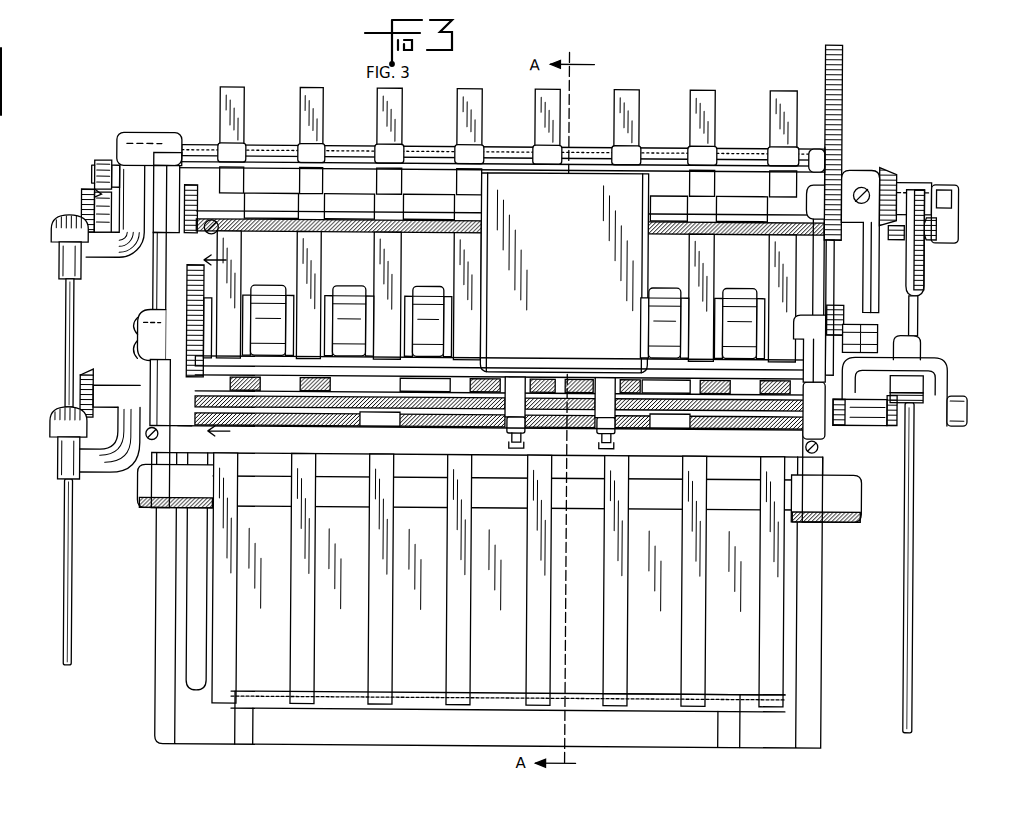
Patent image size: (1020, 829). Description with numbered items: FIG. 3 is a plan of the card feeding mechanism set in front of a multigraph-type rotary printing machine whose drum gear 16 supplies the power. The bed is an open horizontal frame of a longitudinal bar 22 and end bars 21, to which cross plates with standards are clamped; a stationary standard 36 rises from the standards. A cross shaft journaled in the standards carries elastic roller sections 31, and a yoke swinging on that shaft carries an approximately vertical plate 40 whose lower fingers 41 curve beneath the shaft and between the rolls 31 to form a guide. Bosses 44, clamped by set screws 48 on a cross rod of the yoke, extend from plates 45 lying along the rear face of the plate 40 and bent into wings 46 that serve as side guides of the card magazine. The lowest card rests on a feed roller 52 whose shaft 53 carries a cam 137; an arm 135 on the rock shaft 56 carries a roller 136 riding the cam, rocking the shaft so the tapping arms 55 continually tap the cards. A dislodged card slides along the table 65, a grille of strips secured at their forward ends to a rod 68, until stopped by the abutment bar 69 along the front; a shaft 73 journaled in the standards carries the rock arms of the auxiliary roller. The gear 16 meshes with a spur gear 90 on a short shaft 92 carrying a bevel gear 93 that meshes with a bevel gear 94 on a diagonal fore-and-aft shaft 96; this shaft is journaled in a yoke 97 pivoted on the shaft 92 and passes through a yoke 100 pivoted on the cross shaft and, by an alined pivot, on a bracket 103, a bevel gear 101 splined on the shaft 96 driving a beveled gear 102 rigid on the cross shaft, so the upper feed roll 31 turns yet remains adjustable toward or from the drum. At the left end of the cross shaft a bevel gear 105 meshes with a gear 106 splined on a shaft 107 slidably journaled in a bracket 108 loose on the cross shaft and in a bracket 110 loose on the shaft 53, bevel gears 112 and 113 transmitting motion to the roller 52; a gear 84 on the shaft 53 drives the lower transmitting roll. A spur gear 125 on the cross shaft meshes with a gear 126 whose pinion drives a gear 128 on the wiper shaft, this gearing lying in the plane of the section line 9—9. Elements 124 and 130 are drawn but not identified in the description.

The section line 9 is at (214, 346).
The gear 16 is at (840, 102).
The end bars 21 is at (489, 601).
The longitudinal bar 22 is at (508, 719).
The rubber or elastic sections 31 is at (509, 386).
The stationary standard 36 is at (488, 399).
The vertical plate 40 is at (406, 364).
The fingers 41 is at (383, 428).
The bosses 44 is at (510, 428).
The plates 45 is at (510, 377).
The wings 46 is at (486, 290).
The set screws 48 is at (561, 445).
The roller 52 is at (505, 207).
The shaft 53 is at (226, 206).
The tapping arms 55 is at (530, 182).
The rock shaft 56 is at (520, 152).
The table 65 is at (490, 560).
The rod 68 is at (648, 700).
The abutment bar 69 is at (483, 340).
The shaft 73 is at (486, 493).
The gear 84 is at (190, 187).
The spur gear 90 is at (836, 160).
The short shaft 92 is at (960, 192).
The bevel gear 93 is at (895, 172).
The bevel gear 94 is at (923, 240).
The diagonal fore-and-aft shaft 96 is at (914, 477).
The yoke 97 is at (957, 205).
The yoke 100 is at (948, 375).
The bevel gear 101 is at (940, 354).
The beveled gear 102 is at (892, 425).
The bracket 103 is at (969, 410).
The bevel gear 105 is at (93, 385).
The gear 106 is at (50, 414).
The shaft 107 is at (65, 345).
The bracket 108 is at (92, 477).
The bracket 110 is at (107, 268).
The bevel gear 112 is at (52, 222).
The bevel gear 113 is at (80, 200).
The shaft 124 is at (211, 338).
The spur gear 125 is at (192, 438).
The gear 126 is at (137, 318).
The gear 128 is at (186, 280).
The bracket 130 is at (860, 472).
The arm 135 is at (115, 158).
The roller 136 is at (92, 178).
The cam 137 is at (103, 219).